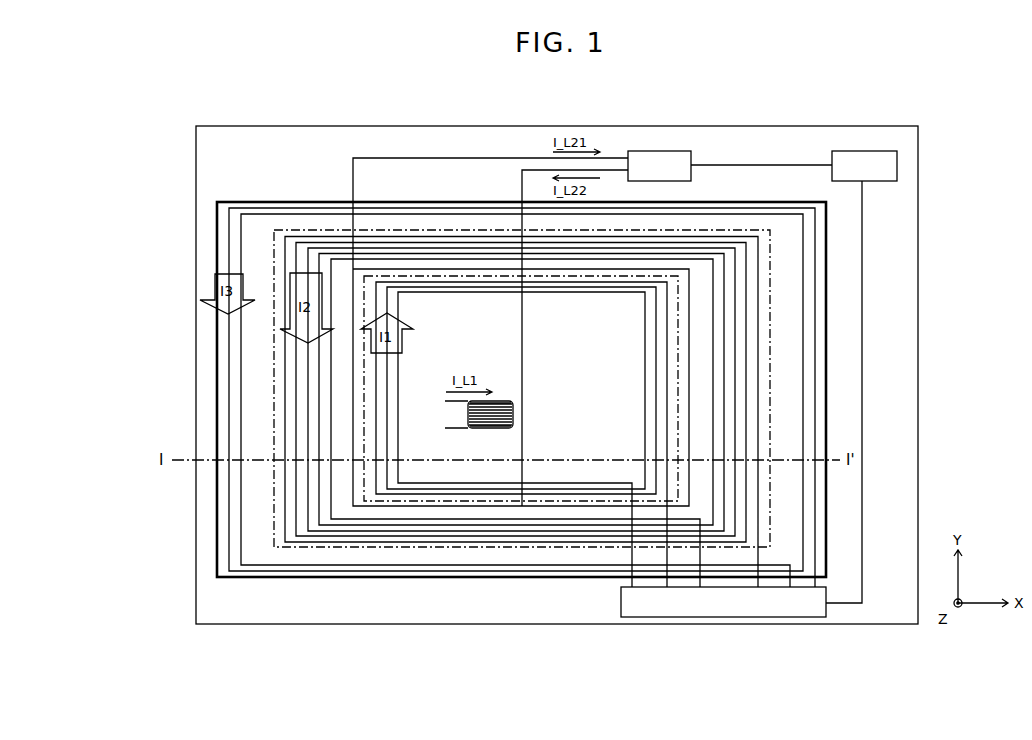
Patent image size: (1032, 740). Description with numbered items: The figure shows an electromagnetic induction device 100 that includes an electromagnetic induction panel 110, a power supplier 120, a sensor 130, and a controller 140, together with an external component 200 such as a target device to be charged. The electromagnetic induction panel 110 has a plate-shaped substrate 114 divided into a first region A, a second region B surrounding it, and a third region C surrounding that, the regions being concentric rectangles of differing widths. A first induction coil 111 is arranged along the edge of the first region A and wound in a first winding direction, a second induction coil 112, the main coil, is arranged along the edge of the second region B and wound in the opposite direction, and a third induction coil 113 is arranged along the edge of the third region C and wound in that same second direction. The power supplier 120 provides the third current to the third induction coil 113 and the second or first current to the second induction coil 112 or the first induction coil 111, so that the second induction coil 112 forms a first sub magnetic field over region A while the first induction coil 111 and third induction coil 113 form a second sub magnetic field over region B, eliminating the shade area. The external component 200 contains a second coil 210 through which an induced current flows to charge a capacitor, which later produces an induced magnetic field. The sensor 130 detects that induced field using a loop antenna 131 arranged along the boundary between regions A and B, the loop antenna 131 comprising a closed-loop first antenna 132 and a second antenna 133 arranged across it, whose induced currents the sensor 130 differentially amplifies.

The electromagnetic induction device 100 is at (244, 122).
The electromagnetic induction panel 110 is at (968, 280).
The first induction coil 111 is at (673, 315).
The second induction coil 112 is at (767, 287).
The third induction coil 113 is at (823, 348).
The substrate 114 is at (826, 376).
The power supplier 120 is at (620, 603).
The sensor 130 is at (660, 150).
The loop antenna 131 is at (545, 102).
The first antenna 132 is at (431, 269).
The second antenna 133 is at (522, 168).
The controller 140 is at (864, 150).
The external component 200 is at (515, 415).
The second coil 210 is at (500, 400).